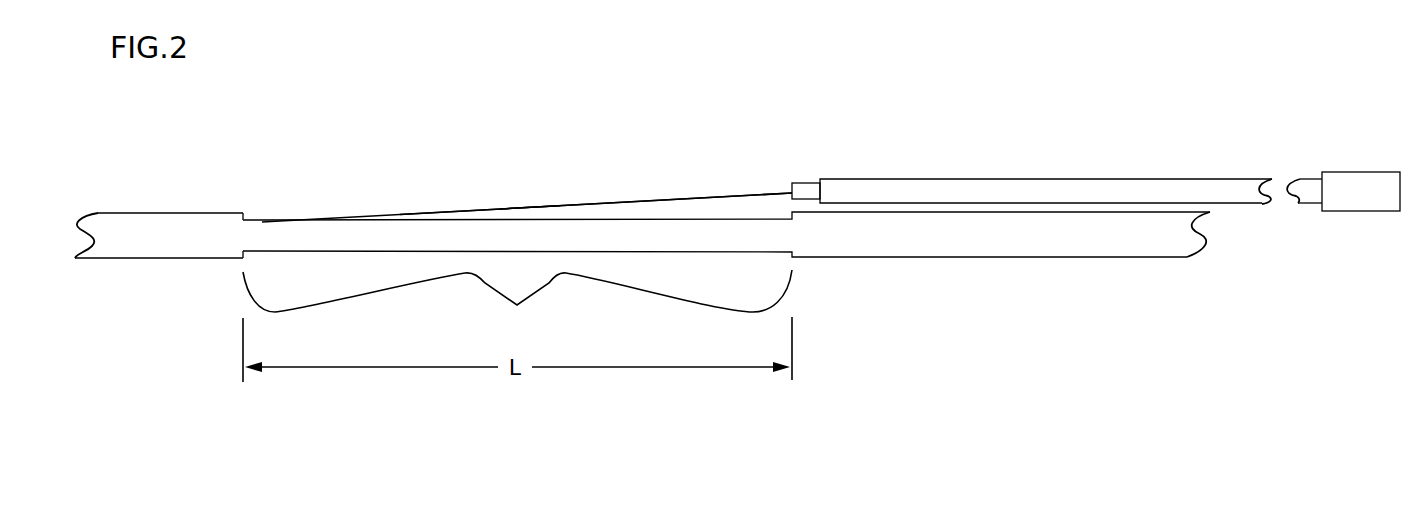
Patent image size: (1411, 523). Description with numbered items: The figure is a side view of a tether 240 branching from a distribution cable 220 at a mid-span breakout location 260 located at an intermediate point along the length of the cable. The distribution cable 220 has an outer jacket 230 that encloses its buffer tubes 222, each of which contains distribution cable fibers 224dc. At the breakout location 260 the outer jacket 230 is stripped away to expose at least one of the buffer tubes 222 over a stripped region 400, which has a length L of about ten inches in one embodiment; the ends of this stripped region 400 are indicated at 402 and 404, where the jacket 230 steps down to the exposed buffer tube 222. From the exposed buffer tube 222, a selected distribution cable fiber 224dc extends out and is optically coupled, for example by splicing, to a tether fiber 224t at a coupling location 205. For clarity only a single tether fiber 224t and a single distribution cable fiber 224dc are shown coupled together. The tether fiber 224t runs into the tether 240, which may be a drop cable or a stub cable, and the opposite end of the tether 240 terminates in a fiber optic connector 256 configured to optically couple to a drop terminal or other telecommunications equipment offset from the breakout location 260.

The coupling location 205 is at (546, 196).
The distribution cable 220 is at (110, 260).
The buffer tube 222 is at (336, 238).
The distribution cable fiber 224dc is at (467, 207).
The tether fiber 224t is at (668, 196).
The outer jacket 230 is at (248, 210).
The tether 240 is at (1235, 188).
The fiber optic connector 256 is at (1343, 180).
The breakout location 260 is at (347, 160).
The stripped region 400 is at (517, 302).
The proximal end of region 402 is at (250, 253).
The distal end of region 404 is at (792, 252).